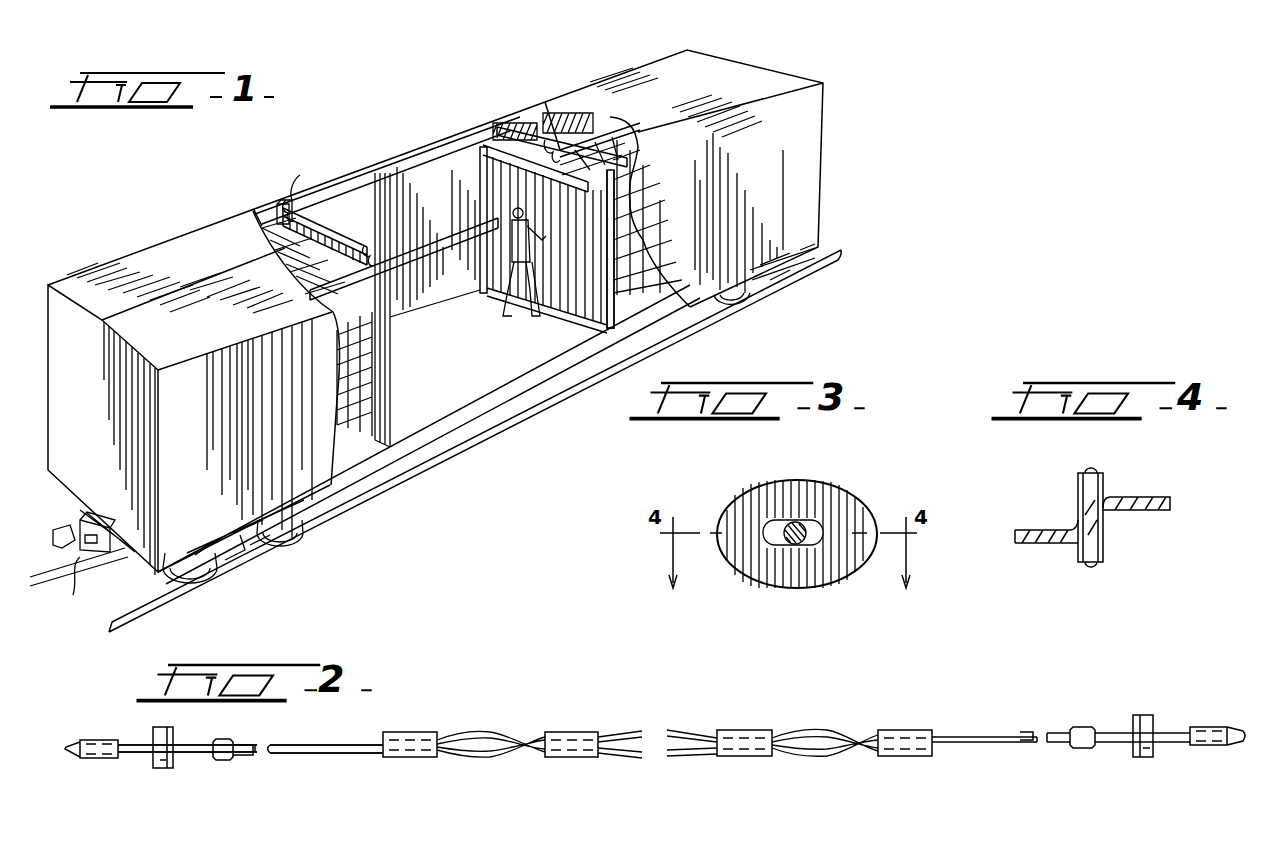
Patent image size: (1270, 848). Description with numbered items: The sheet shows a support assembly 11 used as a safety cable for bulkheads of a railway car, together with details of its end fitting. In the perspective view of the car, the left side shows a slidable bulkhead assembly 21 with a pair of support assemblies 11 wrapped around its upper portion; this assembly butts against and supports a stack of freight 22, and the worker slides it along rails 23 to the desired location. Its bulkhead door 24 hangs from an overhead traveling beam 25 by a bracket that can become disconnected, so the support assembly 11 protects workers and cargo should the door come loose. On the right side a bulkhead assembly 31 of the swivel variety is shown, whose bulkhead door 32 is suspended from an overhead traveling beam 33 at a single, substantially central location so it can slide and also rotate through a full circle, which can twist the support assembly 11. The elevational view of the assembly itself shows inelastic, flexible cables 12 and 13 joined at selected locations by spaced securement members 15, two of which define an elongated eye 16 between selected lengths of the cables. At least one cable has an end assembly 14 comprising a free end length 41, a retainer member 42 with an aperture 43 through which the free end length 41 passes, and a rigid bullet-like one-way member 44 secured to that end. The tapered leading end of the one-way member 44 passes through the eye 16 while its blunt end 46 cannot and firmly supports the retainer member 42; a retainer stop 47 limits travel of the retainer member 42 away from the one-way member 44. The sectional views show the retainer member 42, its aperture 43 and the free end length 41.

In FIG. 1, the support assembly 11 is at (306, 193).
In FIG. 2, the support assembly 11 is at (689, 727).
In FIG. 2, the cable 12 is at (480, 735).
In FIG. 2, the cable 13 is at (830, 752).
In FIG. 2, the end assembly 14 is at (140, 725).
In FIG. 2, the securement member 15 is at (403, 760).
In FIG. 2, the elongated eye 16 is at (470, 743).
In FIG. 1, the slidable bulkhead assembly 21 is at (396, 362).
In FIG. 1, the stack of freight 22 is at (355, 430).
In FIG. 1, the rail 23 is at (412, 160).
In FIG. 1, the bulkhead door 24 is at (280, 243).
In FIG. 1, the overhead traveling beam 25 is at (287, 207).
In FIG. 1, the bulkhead assembly 31 is at (633, 318).
In FIG. 1, the bulkhead door 32 is at (497, 187).
In FIG. 1, the overhead traveling beam 33 is at (520, 137).
In FIG. 3, the free end length 41 is at (785, 527).
In FIG. 4, the free end length 41 is at (1080, 555).
In FIG. 2, the free end length 41 is at (207, 752).
In FIG. 3, the retainer member 42 is at (753, 585).
In FIG. 4, the retainer member 42 is at (1045, 536).
In FIG. 2, the retainer member 42 is at (165, 763).
In FIG. 3, the aperture 43 is at (817, 533).
In FIG. 4, the aperture 43 is at (1112, 505).
In FIG. 2, the one-way member 44 is at (93, 743).
In FIG. 2, the blunt end 46 is at (122, 758).
In FIG. 2, the retainer stop 47 is at (227, 740).